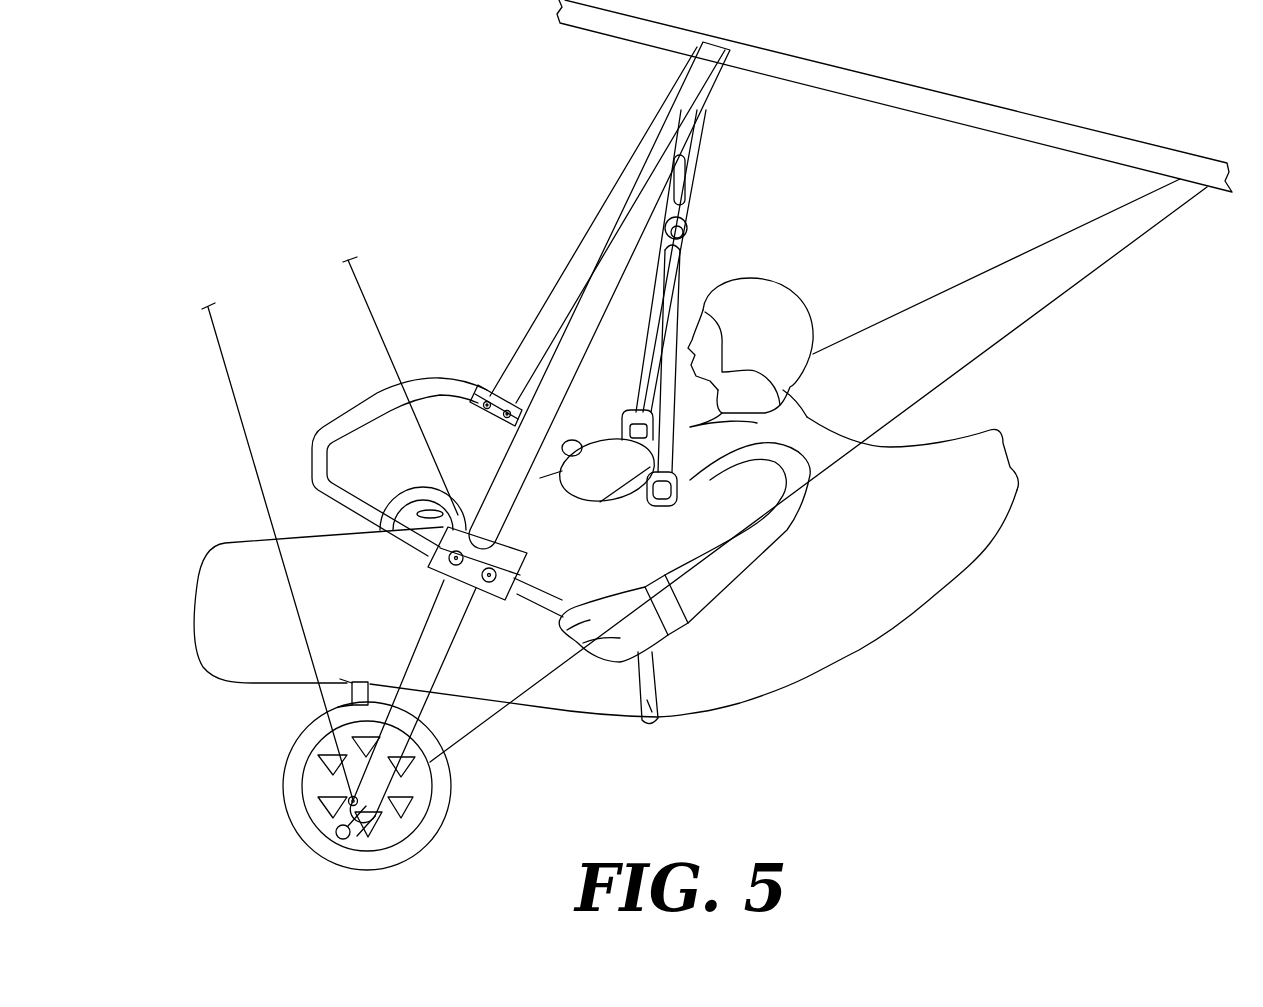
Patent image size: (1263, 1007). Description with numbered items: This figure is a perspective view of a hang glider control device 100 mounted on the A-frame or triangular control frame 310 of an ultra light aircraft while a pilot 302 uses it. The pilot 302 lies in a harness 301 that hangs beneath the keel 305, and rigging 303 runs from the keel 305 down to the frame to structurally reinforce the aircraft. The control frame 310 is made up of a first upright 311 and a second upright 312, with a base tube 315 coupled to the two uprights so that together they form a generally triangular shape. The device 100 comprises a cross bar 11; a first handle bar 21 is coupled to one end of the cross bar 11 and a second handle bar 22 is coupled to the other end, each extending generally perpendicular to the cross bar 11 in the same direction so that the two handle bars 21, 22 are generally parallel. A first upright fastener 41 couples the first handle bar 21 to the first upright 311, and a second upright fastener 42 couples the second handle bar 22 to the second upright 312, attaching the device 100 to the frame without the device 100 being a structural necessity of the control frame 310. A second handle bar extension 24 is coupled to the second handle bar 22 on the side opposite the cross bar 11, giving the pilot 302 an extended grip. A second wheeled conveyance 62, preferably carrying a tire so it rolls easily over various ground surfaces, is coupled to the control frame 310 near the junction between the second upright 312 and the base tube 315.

The hang glider control device 100 is at (322, 270).
The cross bar 11 is at (360, 418).
The first handle bar 21 is at (557, 440).
The second handle bar 22 is at (393, 543).
The second handle bar extension 24 is at (657, 717).
The first upright fastener 41 is at (480, 386).
The second upright fastener 42 is at (440, 575).
The second wheeled conveyance 62 is at (425, 820).
The harness 301 is at (832, 610).
The pilot 302 is at (762, 325).
The rigging 303 is at (223, 370).
The keel 305 is at (927, 102).
The control frame 310 is at (598, 160).
The first upright 311 is at (547, 330).
The second upright 312 is at (603, 287).
The base tube 315 is at (330, 681).